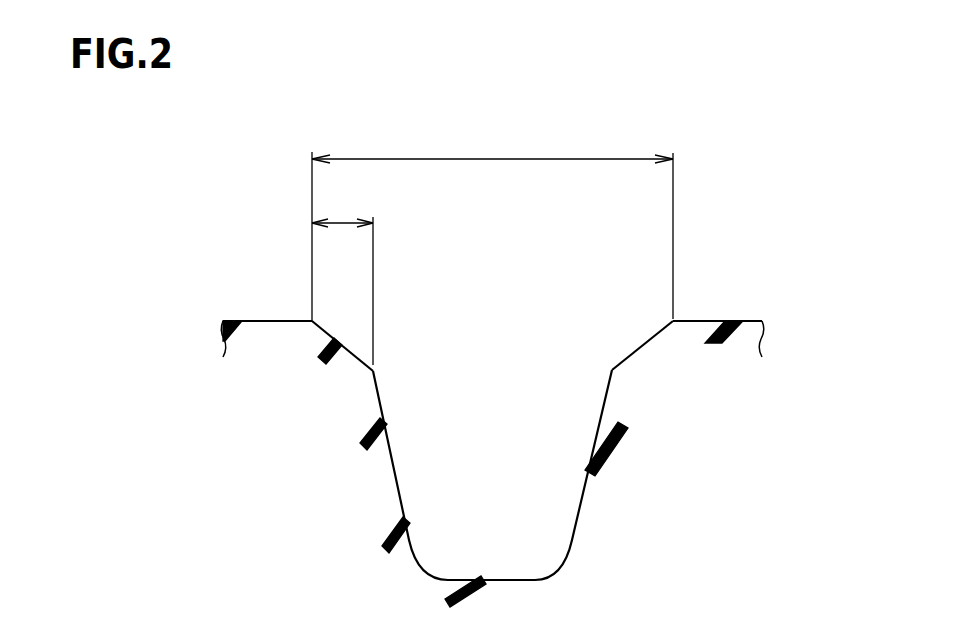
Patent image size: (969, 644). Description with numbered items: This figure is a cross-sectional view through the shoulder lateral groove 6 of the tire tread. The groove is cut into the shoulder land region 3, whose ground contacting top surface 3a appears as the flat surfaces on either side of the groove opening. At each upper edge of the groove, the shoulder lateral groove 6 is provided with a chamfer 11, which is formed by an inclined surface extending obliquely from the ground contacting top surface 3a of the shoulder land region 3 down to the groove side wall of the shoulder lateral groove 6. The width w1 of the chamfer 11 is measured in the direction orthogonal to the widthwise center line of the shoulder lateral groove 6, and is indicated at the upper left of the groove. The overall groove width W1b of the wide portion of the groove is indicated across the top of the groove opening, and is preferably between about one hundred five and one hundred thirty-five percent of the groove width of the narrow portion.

The shoulder land region 3 is at (719, 230).
The ground contacting top surface 3a is at (267, 320).
The chamfer 11 is at (357, 348).
The shoulder lateral groove 6 is at (505, 473).
The groove width of the wide portion W1b is at (492, 223).
The width of the chamfer w1 is at (342, 276).